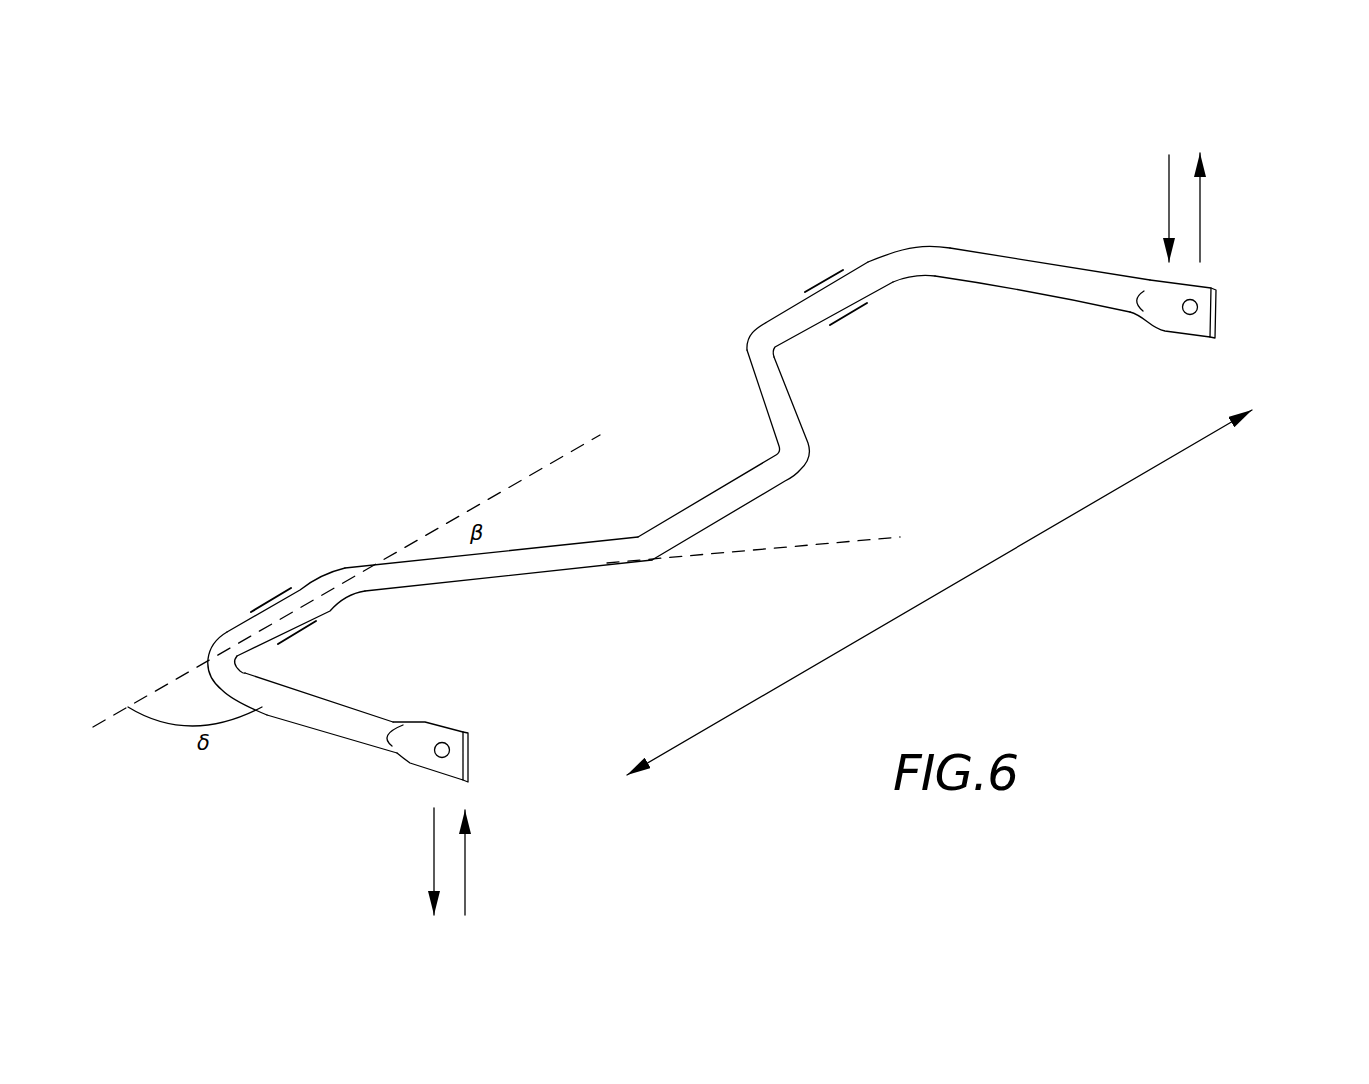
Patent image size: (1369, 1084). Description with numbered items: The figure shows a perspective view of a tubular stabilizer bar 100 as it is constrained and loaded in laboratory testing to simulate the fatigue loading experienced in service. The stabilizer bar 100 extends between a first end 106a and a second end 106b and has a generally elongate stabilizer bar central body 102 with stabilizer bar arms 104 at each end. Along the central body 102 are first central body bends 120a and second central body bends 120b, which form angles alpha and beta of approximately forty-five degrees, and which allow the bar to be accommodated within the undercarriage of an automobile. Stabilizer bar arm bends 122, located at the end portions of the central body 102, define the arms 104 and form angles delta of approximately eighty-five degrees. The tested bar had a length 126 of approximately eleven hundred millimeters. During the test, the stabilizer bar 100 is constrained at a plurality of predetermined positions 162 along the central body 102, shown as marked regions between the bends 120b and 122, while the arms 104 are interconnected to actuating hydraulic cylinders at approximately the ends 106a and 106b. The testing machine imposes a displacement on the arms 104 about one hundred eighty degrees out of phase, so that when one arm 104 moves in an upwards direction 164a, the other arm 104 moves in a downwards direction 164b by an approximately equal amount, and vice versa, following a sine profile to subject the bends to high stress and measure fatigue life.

The stabilizer bar 100 is at (785, 253).
The stabilizer bar central body 102 is at (757, 566).
The stabilizer bar arms 104 is at (1057, 237).
The first end 106a is at (493, 752).
The second end 106b is at (1238, 313).
The first stabilizer bar central body bends 120a is at (838, 460).
The second stabilizer bar central body bends 120b is at (728, 340).
The stabilizer bar arm bends 122 is at (929, 218).
The length 126 is at (1010, 558).
The predetermined positions 162 is at (871, 327).
The upwards direction 164a is at (1200, 225).
The downwards direction 164b is at (1169, 182).